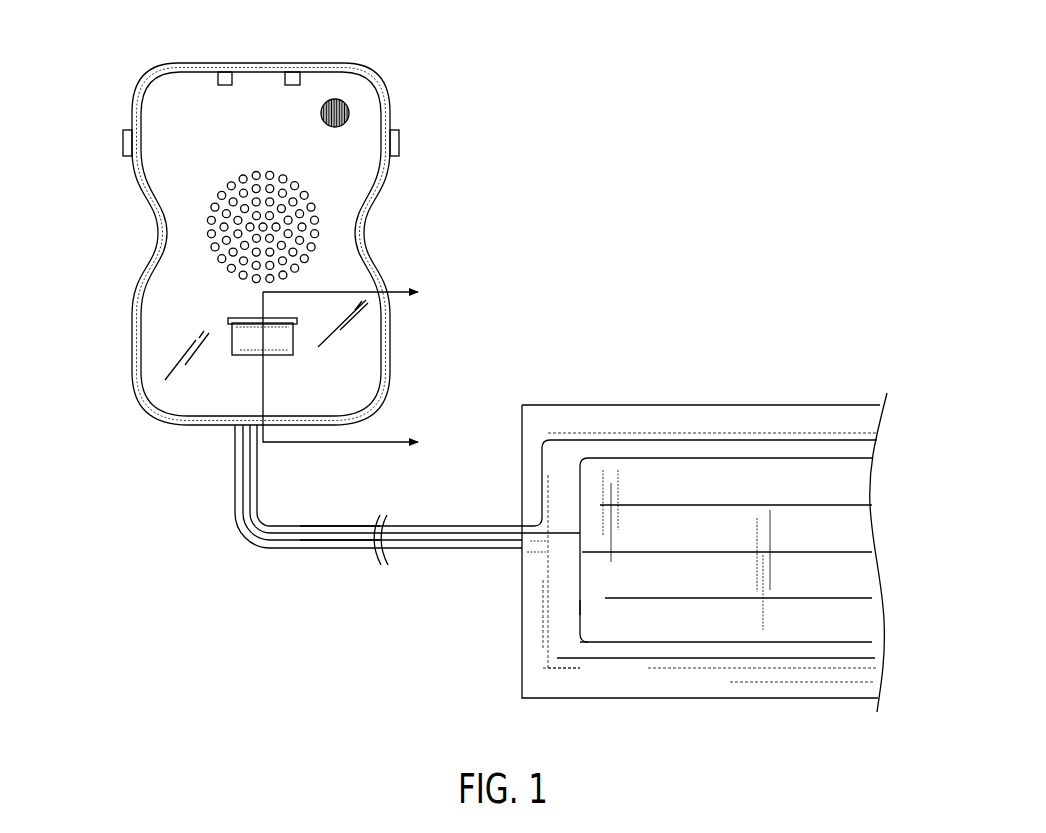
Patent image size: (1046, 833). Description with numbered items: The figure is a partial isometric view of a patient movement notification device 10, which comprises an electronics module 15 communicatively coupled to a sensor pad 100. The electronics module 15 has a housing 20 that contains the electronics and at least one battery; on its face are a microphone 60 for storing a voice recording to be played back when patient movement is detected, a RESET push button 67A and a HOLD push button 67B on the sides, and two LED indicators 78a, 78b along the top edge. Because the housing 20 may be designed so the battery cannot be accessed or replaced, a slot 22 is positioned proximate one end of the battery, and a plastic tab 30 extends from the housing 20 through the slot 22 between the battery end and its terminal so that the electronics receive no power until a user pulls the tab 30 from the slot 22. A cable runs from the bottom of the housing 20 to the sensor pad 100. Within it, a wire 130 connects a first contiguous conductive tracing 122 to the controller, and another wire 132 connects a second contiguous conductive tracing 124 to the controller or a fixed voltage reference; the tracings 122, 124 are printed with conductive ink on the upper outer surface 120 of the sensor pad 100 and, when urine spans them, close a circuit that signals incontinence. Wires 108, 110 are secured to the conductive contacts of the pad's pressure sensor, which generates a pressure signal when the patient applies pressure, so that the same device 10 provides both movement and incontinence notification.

The notification device 10 is at (634, 180).
The electronics module 15 is at (365, 67).
The housing 20 is at (146, 78).
The slot 22 is at (232, 324).
The plastic tab 30 is at (238, 345).
The microphone 60 is at (348, 101).
The RESET push button 67A is at (122, 140).
The HOLD push button 67B is at (395, 139).
The LED indicator 78a is at (222, 72).
The LED indicator 78b is at (293, 72).
The sensor pad 100 is at (660, 402).
The wire 108 is at (463, 546).
The wire 110 is at (420, 553).
The upper outer surface 120 is at (810, 417).
The first contiguous conductive tracing 122 is at (540, 464).
The second contiguous conductive tracing 124 is at (580, 607).
The wire 130 is at (413, 532).
The wire 132 is at (475, 527).